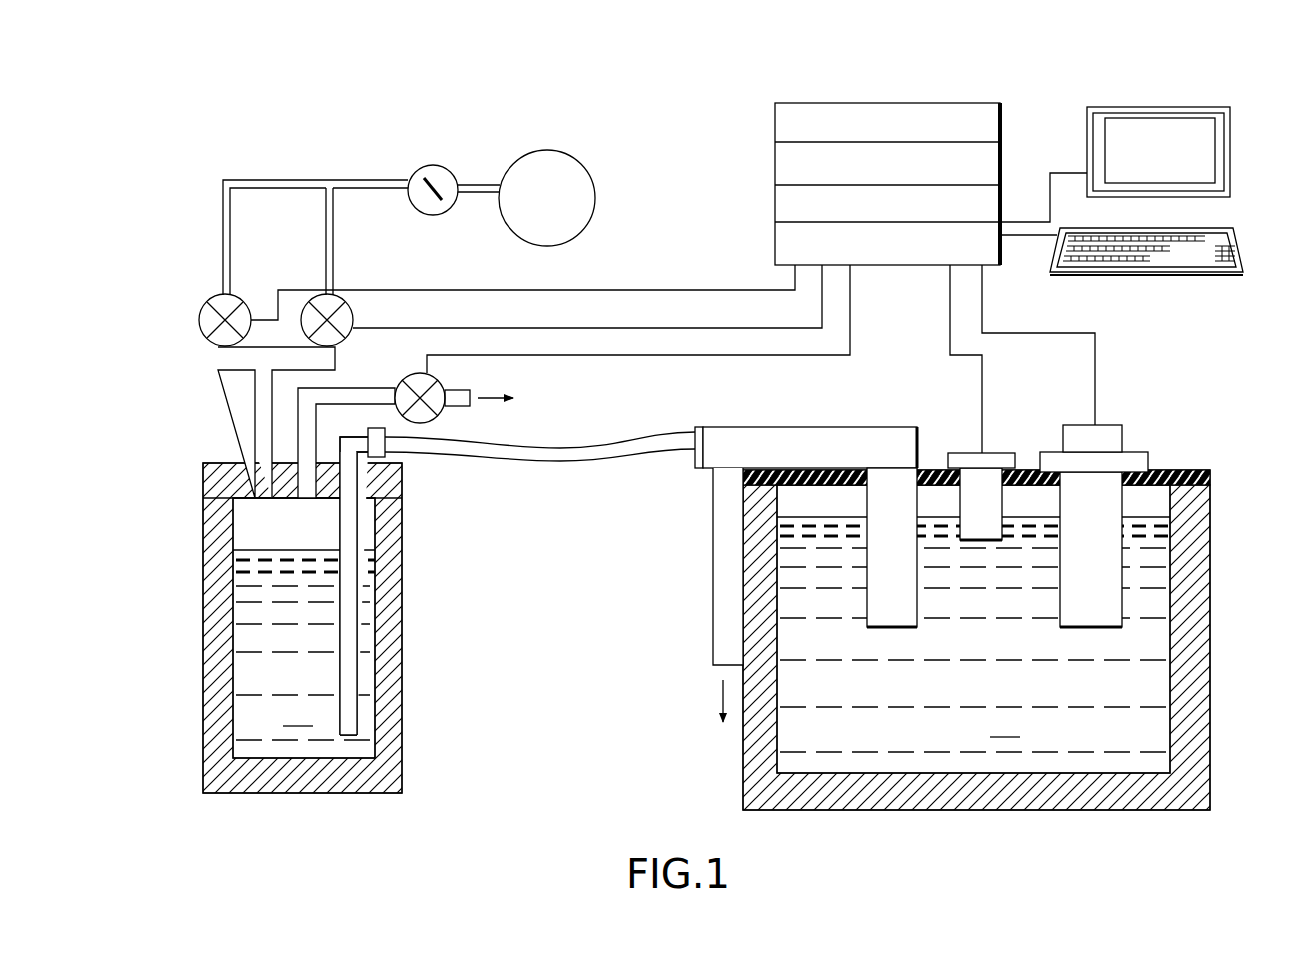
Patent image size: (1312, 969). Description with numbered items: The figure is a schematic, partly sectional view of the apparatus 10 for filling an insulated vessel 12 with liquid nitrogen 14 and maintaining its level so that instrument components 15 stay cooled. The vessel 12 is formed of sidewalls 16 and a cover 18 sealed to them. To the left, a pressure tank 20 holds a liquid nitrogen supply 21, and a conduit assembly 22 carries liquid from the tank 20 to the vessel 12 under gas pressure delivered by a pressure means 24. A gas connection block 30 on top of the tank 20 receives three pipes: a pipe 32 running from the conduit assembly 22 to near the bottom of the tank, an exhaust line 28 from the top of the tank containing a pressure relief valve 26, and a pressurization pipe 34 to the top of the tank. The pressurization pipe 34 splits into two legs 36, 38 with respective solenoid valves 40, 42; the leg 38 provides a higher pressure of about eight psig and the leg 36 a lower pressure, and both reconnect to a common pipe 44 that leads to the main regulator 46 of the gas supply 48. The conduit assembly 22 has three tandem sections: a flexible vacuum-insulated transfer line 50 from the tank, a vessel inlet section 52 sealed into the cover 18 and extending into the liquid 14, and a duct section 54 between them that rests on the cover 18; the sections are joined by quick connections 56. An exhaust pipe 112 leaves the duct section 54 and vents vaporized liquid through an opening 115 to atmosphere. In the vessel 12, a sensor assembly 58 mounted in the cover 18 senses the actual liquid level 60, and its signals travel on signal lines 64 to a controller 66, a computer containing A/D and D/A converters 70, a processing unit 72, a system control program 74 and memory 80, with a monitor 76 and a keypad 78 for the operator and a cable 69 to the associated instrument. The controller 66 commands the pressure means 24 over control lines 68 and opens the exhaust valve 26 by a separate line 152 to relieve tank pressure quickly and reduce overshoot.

The apparatus 10 is at (667, 136).
The insulated vessel 12 is at (954, 586).
The liquid nitrogen 14 is at (973, 634).
The instrument components 15 is at (1136, 446).
The sidewalls 16 is at (1170, 698).
The cover 18 is at (1200, 470).
The pressure tank 20 is at (414, 558).
The liquid nitrogen supply 21 is at (304, 645).
The conduit assembly 22 is at (693, 425).
The pressure means 24 is at (166, 341).
The pressure relief valve 26 is at (440, 382).
The exhaust line 28 is at (330, 388).
The gas connection block 30 is at (213, 462).
The pipe 32 is at (340, 545).
The pressurization pipe 34 is at (255, 400).
The leg 36 is at (223, 221).
The leg 38 is at (333, 241).
The solenoid valve 40 is at (200, 318).
The solenoid valve 42 is at (346, 340).
The common pipe 44 is at (370, 180).
The main regulator 46 is at (440, 216).
The gas supply 48 is at (580, 232).
The transfer line 50 is at (548, 440).
The vessel inlet section 52 is at (865, 600).
The duct section 54 is at (770, 426).
The connections 56 is at (385, 457).
The sensor assembly 58 is at (955, 505).
The liquid level 60 is at (1030, 522).
The signal lines 64 is at (982, 400).
The controller 66 is at (850, 145).
The control lines 68 is at (706, 326).
The cable 69 is at (1095, 368).
The A/D and D/A converters 70 is at (775, 248).
The processing unit 72 is at (775, 208).
The system control program 74 is at (775, 165).
The monitor 76 is at (1232, 148).
The keypad 78 is at (1245, 243).
The memory 80 is at (775, 125).
The exhaust pipe 112 is at (713, 590).
The opening 115 is at (713, 670).
The line 152 is at (588, 356).